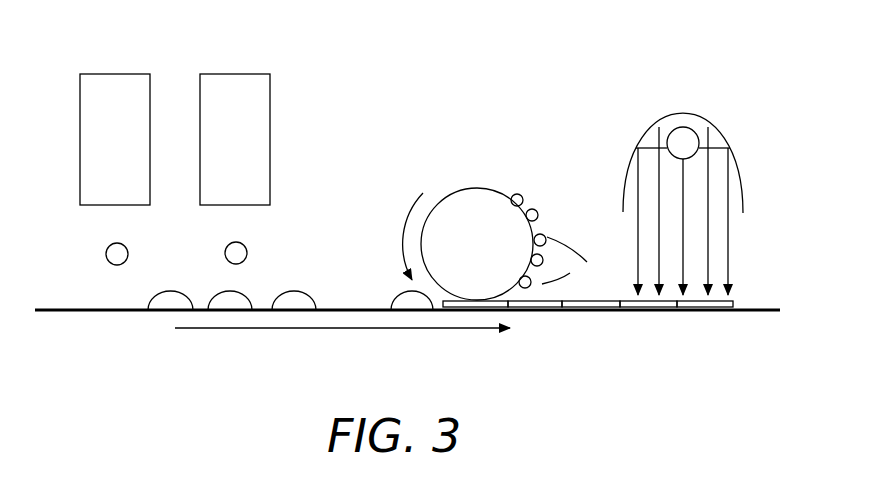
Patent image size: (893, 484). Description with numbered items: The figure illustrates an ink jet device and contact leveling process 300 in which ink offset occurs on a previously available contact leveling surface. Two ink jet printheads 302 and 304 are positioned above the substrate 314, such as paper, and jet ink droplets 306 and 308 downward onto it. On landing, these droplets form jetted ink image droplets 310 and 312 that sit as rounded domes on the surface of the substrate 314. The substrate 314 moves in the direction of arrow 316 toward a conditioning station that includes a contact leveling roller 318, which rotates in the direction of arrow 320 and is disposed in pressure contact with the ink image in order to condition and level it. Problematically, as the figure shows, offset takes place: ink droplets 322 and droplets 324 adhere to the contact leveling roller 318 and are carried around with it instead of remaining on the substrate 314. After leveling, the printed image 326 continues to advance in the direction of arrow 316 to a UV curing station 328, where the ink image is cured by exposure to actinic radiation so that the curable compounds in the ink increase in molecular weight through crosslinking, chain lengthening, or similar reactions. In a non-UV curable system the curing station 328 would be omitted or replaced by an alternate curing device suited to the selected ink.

The ink jet device and contact leveling process 300 is at (618, 67).
The ink jet printhead 302 is at (100, 72).
The ink jet printhead 304 is at (226, 72).
The ink droplet 306 is at (106, 254).
The ink droplet 308 is at (226, 246).
The jetted ink image droplet 310 is at (150, 297).
The jetted ink image droplets 312 is at (246, 293).
The substrate 314 is at (137, 313).
The arrow (direction of substrate movement) 316 is at (350, 331).
The contact leveling roller 318 is at (458, 190).
The arrow (direction of roller rotation) 320 is at (402, 238).
The particles 322 is at (557, 262).
The offset droplets 324 is at (573, 261).
The printed image 326 is at (612, 300).
The UV curing station 328 is at (735, 165).